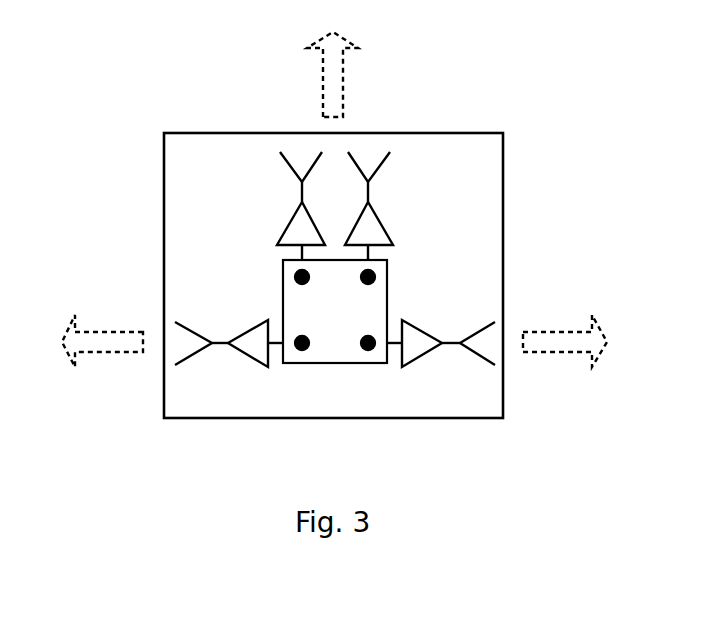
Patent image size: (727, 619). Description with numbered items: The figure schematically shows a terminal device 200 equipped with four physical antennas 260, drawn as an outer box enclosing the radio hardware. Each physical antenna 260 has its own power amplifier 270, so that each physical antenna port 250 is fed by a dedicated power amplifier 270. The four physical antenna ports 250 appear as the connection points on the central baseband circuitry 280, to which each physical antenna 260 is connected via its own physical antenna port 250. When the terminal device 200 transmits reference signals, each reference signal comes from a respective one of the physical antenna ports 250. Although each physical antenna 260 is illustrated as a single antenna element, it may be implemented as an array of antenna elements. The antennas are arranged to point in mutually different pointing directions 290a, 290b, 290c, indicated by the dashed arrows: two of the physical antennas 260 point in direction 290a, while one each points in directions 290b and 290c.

The terminal device 200 is at (356, 405).
The physical antenna port 250 is at (377, 281).
The physical antenna 260 is at (385, 165).
The power amplifier 270 is at (385, 229).
The baseband circuitry 280 is at (282, 282).
The pointing direction 290a is at (335, 82).
The pointing direction 290b is at (108, 342).
The pointing direction 290c is at (562, 342).